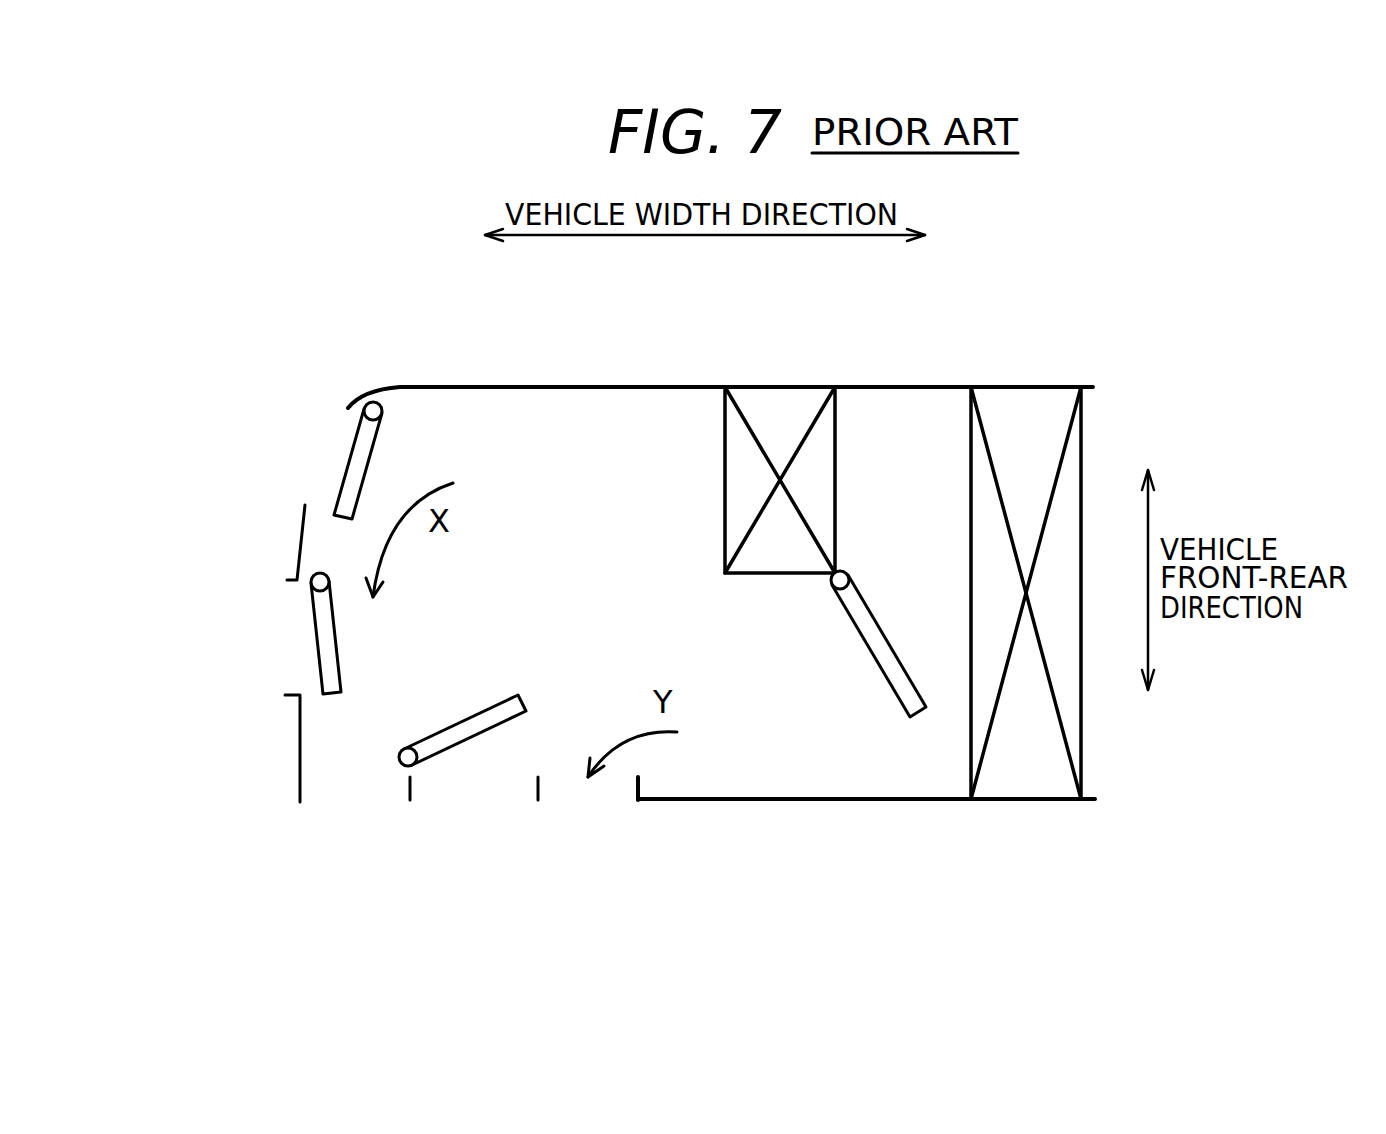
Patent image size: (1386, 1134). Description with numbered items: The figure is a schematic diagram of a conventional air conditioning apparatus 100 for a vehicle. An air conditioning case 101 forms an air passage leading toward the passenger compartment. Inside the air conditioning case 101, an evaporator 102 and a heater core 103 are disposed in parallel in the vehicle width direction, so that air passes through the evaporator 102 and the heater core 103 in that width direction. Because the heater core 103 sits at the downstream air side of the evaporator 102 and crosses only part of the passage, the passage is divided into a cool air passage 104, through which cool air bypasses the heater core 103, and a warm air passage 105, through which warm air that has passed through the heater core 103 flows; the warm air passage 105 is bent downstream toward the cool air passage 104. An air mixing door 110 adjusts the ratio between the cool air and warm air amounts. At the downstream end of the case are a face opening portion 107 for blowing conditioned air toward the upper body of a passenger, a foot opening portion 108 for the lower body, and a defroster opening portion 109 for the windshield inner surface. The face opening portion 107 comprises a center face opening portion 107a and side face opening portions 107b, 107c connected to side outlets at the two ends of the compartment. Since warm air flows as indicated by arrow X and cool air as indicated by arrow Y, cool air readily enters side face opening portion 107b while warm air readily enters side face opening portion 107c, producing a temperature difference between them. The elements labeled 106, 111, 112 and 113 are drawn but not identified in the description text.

The air conditioning apparatus 100 is at (895, 357).
The air conditioning case 101 is at (640, 387).
The evaporator 102 is at (1028, 432).
The heater core 103 is at (775, 413).
The cool air passage 104 is at (755, 772).
The warm air passage 105 is at (578, 445).
The warm air passage 106 is at (527, 585).
The face opening portion 107 is at (475, 828).
The center face opening portion 107a is at (535, 793).
The side face opening portion 107b is at (632, 790).
The side face opening portion 107c is at (405, 793).
The foot opening portion 108 is at (333, 438).
The defroster opening portion 109 is at (292, 633).
The air mixing door 110 is at (890, 687).
The lower mode door 111 is at (463, 752).
The middle mode door 112 is at (308, 617).
The partition wall 113 is at (337, 477).